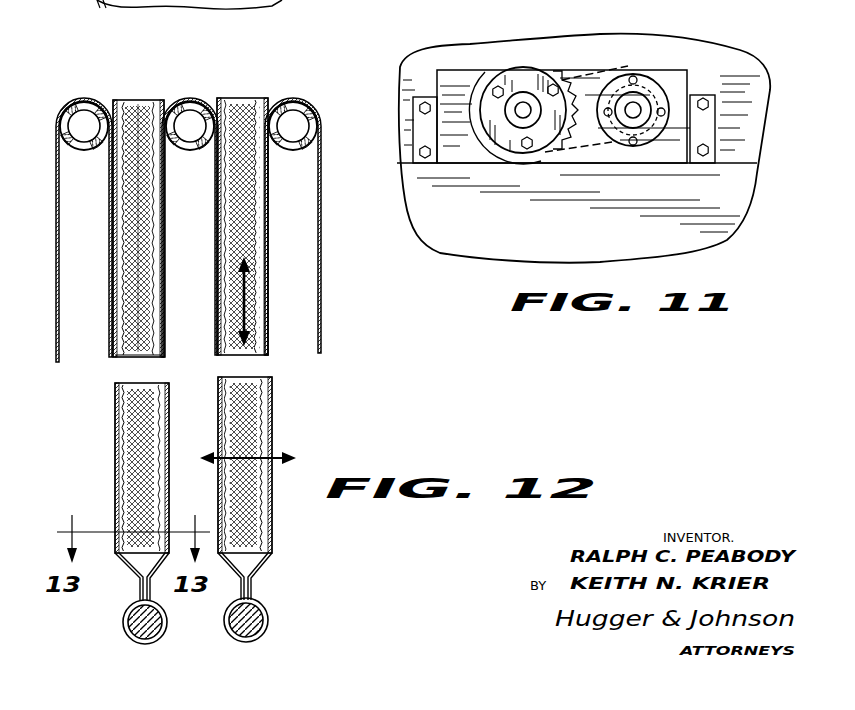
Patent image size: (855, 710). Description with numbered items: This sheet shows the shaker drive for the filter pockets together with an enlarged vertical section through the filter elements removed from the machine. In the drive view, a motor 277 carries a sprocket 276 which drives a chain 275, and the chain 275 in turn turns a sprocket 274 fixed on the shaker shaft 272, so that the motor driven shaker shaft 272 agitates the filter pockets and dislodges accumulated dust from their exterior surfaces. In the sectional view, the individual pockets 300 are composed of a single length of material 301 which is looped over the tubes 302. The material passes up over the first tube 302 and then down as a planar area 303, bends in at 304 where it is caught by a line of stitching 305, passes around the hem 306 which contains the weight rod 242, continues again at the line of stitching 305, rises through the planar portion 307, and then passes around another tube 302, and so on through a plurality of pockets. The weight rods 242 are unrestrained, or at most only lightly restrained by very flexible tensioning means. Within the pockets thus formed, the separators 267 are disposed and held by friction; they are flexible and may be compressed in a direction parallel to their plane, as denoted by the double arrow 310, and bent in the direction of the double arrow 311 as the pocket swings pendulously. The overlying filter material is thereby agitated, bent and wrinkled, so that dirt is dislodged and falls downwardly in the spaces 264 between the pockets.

In FIG. 12, the weight rod 242 is at (150, 640).
In FIG. 12, the spaces 264 is at (103, 369).
In FIG. 12, the separators 267 is at (143, 100).
In FIG. 11, the shaker shaft 272 is at (523, 113).
In FIG. 11, the sprocket 274 is at (565, 78).
In FIG. 11, the chain 275 is at (600, 70).
In FIG. 11, the sprocket 276 is at (646, 92).
In FIG. 11, the motor 277 is at (483, 147).
In FIG. 12, the pockets 300 is at (173, 445).
In FIG. 12, the length of material 301 is at (57, 298).
In FIG. 12, the tubes 302 is at (91, 151).
In FIG. 12, the planar area 303 is at (112, 264).
In FIG. 12, the bend 304 is at (141, 583).
In FIG. 12, the line of stitching 305 is at (149, 588).
In FIG. 12, the hem 306 is at (125, 631).
In FIG. 12, the planar portion 307 is at (165, 314).
In FIG. 12, the double arrow 310 is at (247, 302).
In FIG. 12, the double arrow 311 is at (276, 456).